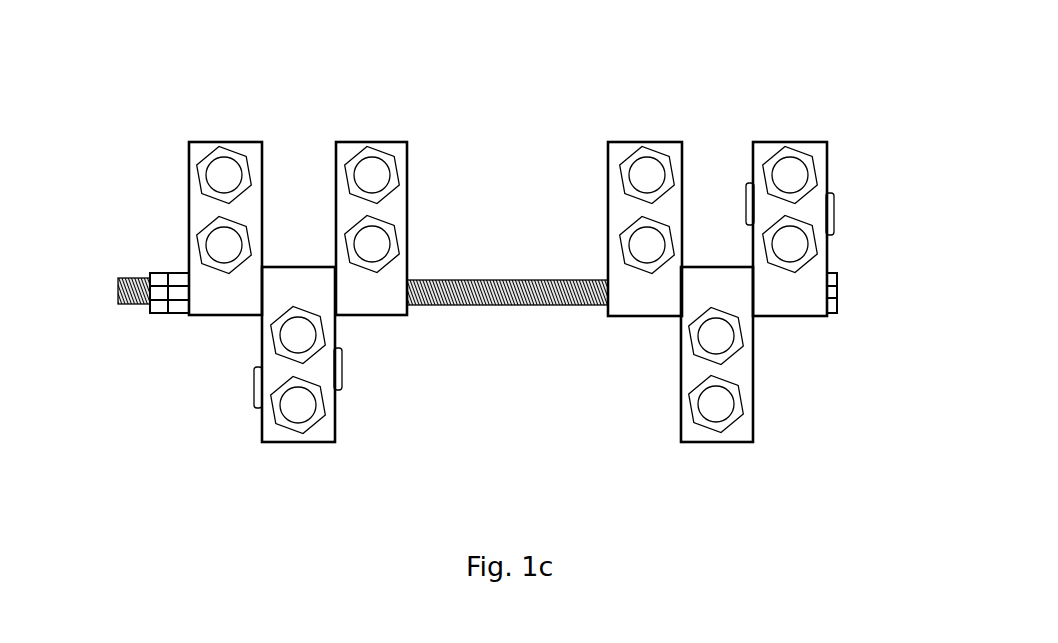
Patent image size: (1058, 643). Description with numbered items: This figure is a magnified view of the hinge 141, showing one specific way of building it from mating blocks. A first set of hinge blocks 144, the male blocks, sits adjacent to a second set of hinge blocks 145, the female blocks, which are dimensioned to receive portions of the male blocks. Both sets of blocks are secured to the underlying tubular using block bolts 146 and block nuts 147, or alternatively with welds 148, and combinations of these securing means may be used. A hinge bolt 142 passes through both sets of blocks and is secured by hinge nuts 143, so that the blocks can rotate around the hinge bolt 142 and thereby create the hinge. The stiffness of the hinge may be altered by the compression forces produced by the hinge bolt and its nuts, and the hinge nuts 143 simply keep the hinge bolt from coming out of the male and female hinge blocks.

The hinge 141 is at (150, 113).
The hinge bolt 142 is at (128, 306).
The hinge nuts 143 is at (176, 271).
The first set of hinge blocks 144 is at (678, 444).
The second set of hinge blocks 145 is at (766, 140).
The block bolts 146 is at (620, 190).
The block nuts 147 is at (686, 404).
The welds 148 is at (331, 371).